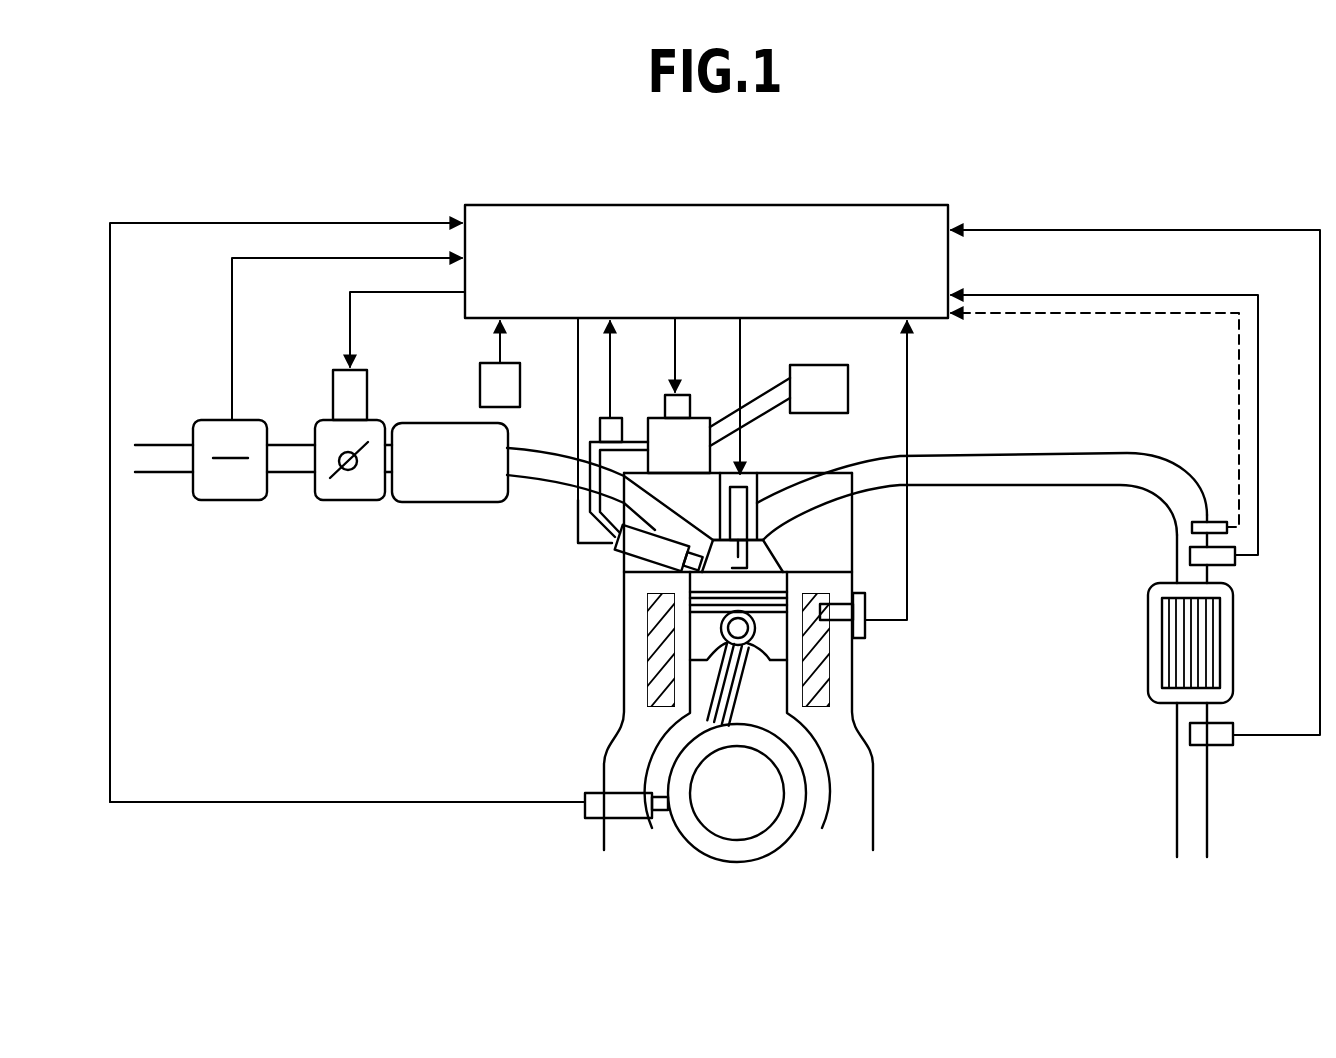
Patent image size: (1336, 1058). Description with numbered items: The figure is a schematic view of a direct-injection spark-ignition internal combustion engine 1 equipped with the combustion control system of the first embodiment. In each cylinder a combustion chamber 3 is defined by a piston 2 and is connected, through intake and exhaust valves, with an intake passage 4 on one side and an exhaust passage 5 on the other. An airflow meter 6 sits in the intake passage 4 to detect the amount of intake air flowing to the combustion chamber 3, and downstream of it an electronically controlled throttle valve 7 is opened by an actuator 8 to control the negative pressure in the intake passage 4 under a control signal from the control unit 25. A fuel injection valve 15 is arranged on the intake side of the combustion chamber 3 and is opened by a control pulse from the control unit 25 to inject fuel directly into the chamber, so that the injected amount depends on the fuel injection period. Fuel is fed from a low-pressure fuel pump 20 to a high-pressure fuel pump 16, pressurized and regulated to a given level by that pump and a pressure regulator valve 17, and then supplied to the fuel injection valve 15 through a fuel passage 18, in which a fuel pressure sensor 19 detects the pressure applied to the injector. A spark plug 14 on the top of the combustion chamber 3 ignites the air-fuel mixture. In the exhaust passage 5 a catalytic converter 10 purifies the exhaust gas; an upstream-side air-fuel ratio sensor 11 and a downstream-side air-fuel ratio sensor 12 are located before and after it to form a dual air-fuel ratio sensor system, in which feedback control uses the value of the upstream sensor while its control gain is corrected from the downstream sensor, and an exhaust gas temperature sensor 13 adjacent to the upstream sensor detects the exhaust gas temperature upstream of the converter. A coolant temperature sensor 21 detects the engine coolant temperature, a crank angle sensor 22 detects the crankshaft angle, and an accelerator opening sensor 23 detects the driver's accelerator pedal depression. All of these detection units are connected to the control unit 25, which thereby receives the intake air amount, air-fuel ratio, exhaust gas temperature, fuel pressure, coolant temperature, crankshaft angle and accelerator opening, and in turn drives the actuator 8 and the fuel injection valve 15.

The direct-injection spark-ignition internal combustion engine 1 is at (608, 690).
The piston 2 is at (772, 646).
The combustion chamber 3 is at (768, 560).
The intake passage 4 is at (154, 473).
The exhaust passage 5 is at (1032, 453).
The airflow meter 6 is at (245, 500).
The throttle valve 7 is at (338, 470).
The actuator 8 is at (333, 396).
The catalytic converter 10 is at (1148, 625).
The upstream-side air-fuel ratio sensor 11 is at (1230, 568).
The downstream-side air-fuel ratio sensor 12 is at (1222, 745).
The exhaust gas temperature sensor 13 is at (1215, 522).
The spark plug 14 is at (748, 503).
The fuel injection valve 15 is at (613, 553).
The high-pressure fuel pump 16 is at (704, 418).
The pressure regulator valve 17 is at (664, 395).
The fuel passage 18 is at (578, 540).
The fuel pressure sensor 19 is at (612, 418).
The low-pressure fuel pump 20 is at (848, 376).
The coolant temperature sensor 21 is at (868, 628).
The crank angle sensor 22 is at (598, 793).
The accelerator opening sensor 23 is at (480, 385).
The control unit 25 is at (882, 205).